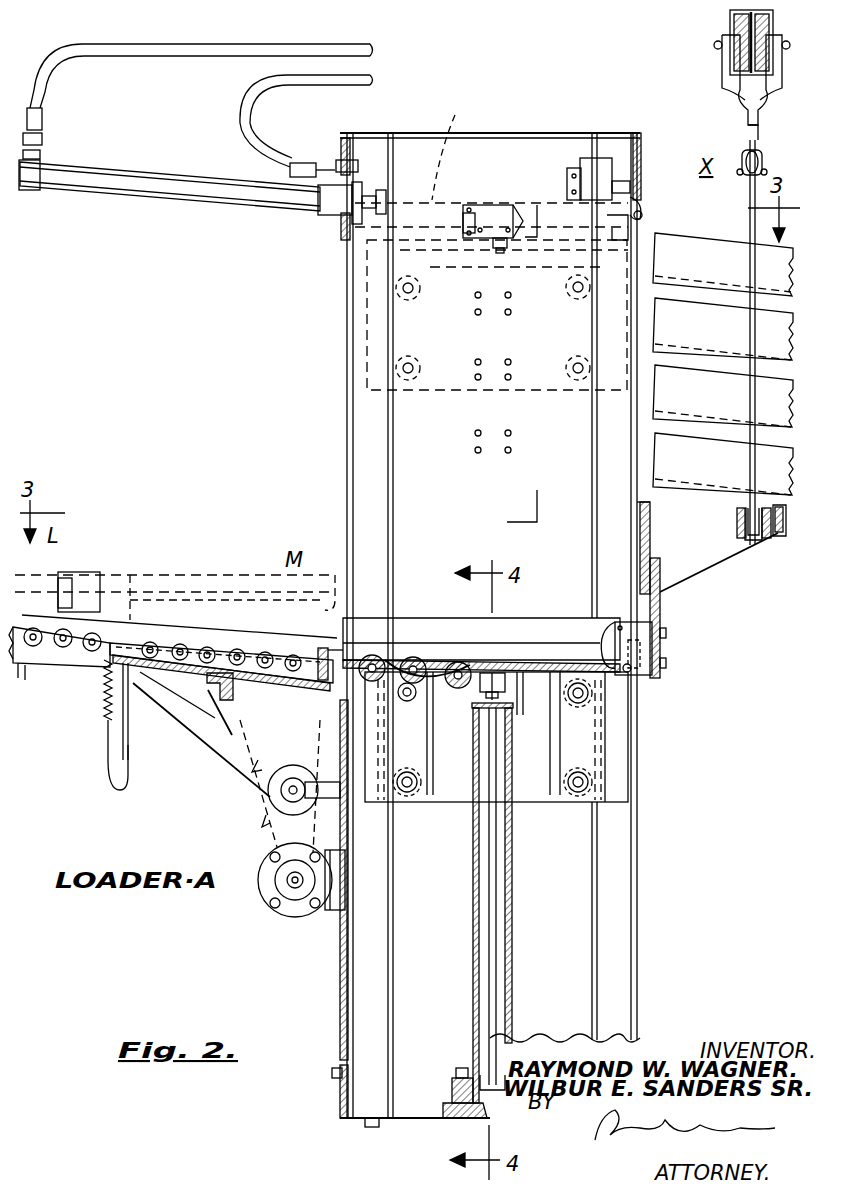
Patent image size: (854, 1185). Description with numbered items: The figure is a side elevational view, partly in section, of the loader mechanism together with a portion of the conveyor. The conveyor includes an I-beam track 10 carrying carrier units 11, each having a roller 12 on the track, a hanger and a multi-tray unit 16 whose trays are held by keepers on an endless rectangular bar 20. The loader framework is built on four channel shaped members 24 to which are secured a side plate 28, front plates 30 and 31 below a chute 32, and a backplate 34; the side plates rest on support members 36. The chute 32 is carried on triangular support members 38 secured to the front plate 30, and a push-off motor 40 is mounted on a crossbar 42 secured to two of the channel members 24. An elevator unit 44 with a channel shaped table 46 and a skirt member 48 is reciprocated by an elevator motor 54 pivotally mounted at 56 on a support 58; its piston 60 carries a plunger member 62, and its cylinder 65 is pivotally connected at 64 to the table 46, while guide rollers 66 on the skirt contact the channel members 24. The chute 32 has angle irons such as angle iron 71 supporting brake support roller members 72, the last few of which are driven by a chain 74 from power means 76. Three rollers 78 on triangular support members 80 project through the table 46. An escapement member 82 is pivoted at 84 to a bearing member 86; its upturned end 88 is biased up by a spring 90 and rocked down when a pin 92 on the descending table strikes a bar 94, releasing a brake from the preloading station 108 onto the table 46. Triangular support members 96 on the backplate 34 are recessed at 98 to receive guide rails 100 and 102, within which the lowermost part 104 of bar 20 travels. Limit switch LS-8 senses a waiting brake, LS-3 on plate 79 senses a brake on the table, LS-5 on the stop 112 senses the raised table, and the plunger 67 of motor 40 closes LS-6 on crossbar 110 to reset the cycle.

The I-beam track 10 is at (740, 80).
The carrier unit 11 is at (700, 240).
The roller 12 is at (738, 28).
The multi-tray unit 16 is at (700, 265).
The endless rectangular shaped bar 20 is at (748, 395).
The channel shaped members 24 is at (388, 515).
The side plate 28 is at (540, 138).
The front plate 30 is at (350, 805).
The front plate 31 is at (340, 1100).
The chute 32 is at (138, 568).
The backplate 34 is at (650, 505).
The support members 36 is at (368, 1125).
The support members 38 is at (240, 790).
The work push-off motor 40 is at (180, 210).
The crossbar 42 is at (340, 140).
The elevator unit 44 is at (628, 760).
The channel shaped table 46 is at (470, 642).
The skirt member 48 is at (618, 780).
The elevator motor 54 is at (512, 900).
The pivot mounting 56 is at (455, 1078).
The support 58 is at (445, 1105).
The piston 60 is at (490, 1075).
The plunger member 62 is at (497, 963).
The pivotal connection 64 is at (508, 683).
The cylinder 65 is at (473, 935).
The guide rollers 66 is at (410, 302).
The plunger 67 is at (451, 144).
The angle iron 71 is at (75, 665).
The brake support roller members 72 is at (185, 645).
The chain 74 is at (238, 718).
The power means 76 is at (258, 900).
The rollers 78 is at (375, 655).
The plate 79 is at (662, 612).
The support members 80 is at (462, 688).
The escapement member 82 is at (193, 670).
The pivot 84 is at (228, 725).
The bearing member 86 is at (205, 700).
The upturned end 88 is at (322, 645).
The spring 90 is at (100, 720).
The pin 92 is at (482, 255).
The bar 94 is at (320, 722).
The support members 96 is at (707, 565).
The recess 98 is at (748, 535).
The guide rail 100 is at (737, 518).
The guide rail 102 is at (768, 540).
The lowermost transversely extending part 104 is at (777, 538).
The preloading station 108 is at (158, 580).
The crossbar 110 is at (641, 150).
The stop 112 is at (500, 203).
The limit switch LS-3 is at (660, 658).
The limit switch LS-5 is at (490, 255).
The limit switch LS-6 is at (600, 160).
The limit switch LS-8 is at (82, 580).